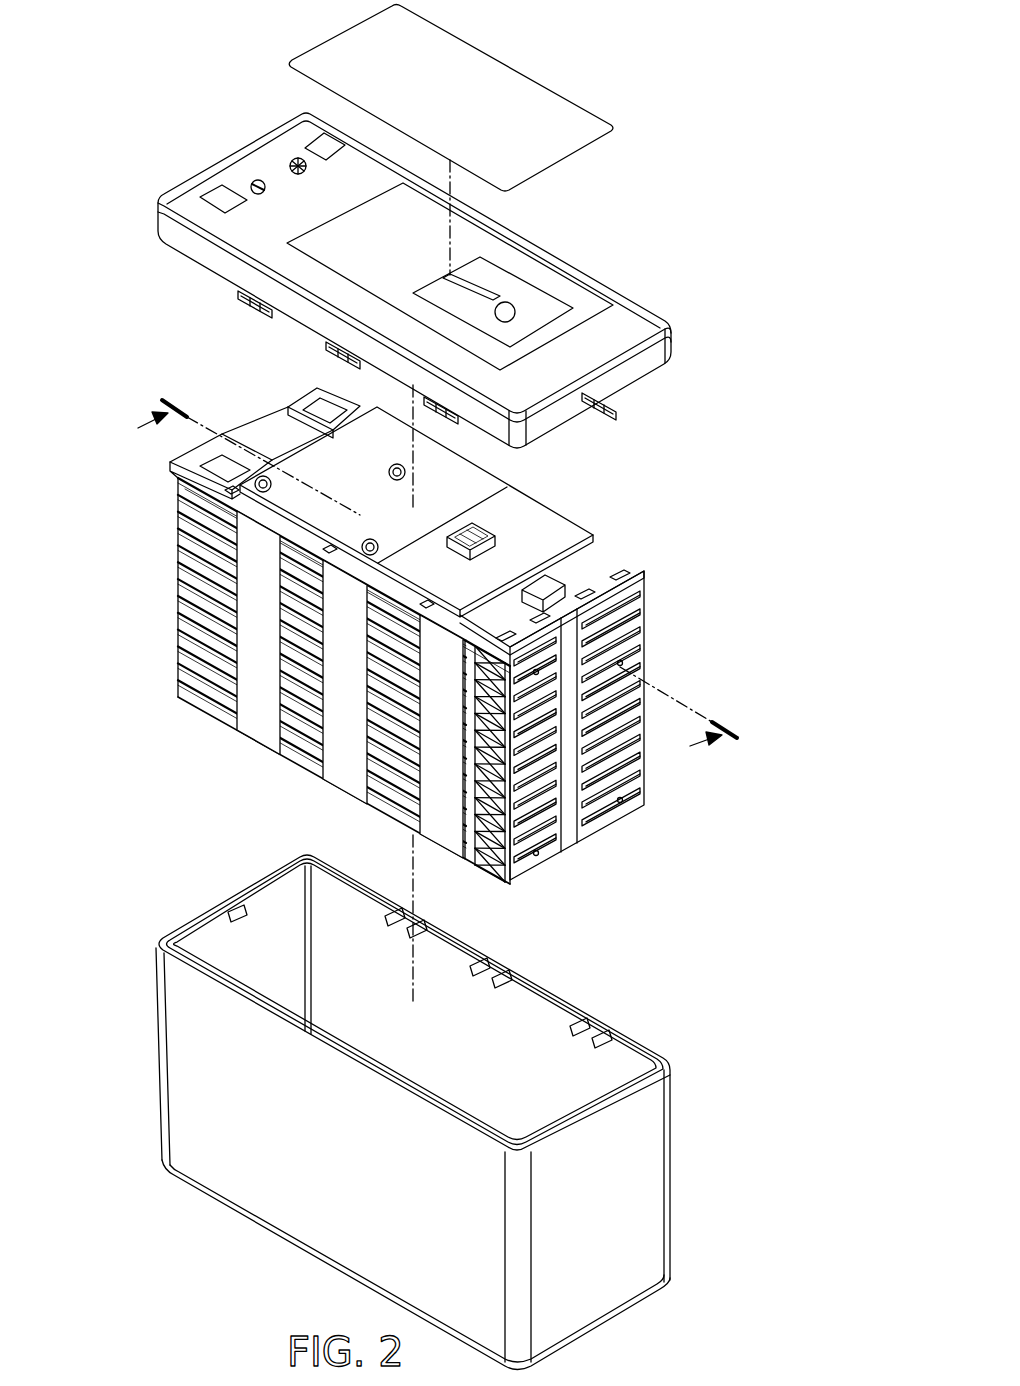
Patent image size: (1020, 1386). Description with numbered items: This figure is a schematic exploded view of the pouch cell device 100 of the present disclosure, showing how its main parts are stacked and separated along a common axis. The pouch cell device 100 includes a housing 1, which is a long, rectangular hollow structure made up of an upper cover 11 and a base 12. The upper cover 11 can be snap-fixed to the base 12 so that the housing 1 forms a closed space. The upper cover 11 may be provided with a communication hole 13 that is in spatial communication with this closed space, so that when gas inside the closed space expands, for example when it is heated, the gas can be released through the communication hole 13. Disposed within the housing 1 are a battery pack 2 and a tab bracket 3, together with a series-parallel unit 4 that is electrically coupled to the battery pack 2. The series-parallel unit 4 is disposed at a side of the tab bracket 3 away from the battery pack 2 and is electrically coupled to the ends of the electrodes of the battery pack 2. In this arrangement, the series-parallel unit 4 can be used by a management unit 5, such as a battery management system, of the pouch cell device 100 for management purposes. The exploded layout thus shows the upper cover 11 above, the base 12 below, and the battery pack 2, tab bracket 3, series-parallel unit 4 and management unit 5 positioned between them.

The pouch cell device 100 is at (623, 32).
The housing 1 is at (745, 240).
The upper cover 11 is at (625, 392).
The base 12 is at (637, 1035).
The communication hole 13 is at (512, 307).
The battery pack 2 is at (170, 575).
The tab bracket 3 is at (494, 878).
The series-parallel unit 4 is at (588, 850).
The management unit 5 is at (542, 502).